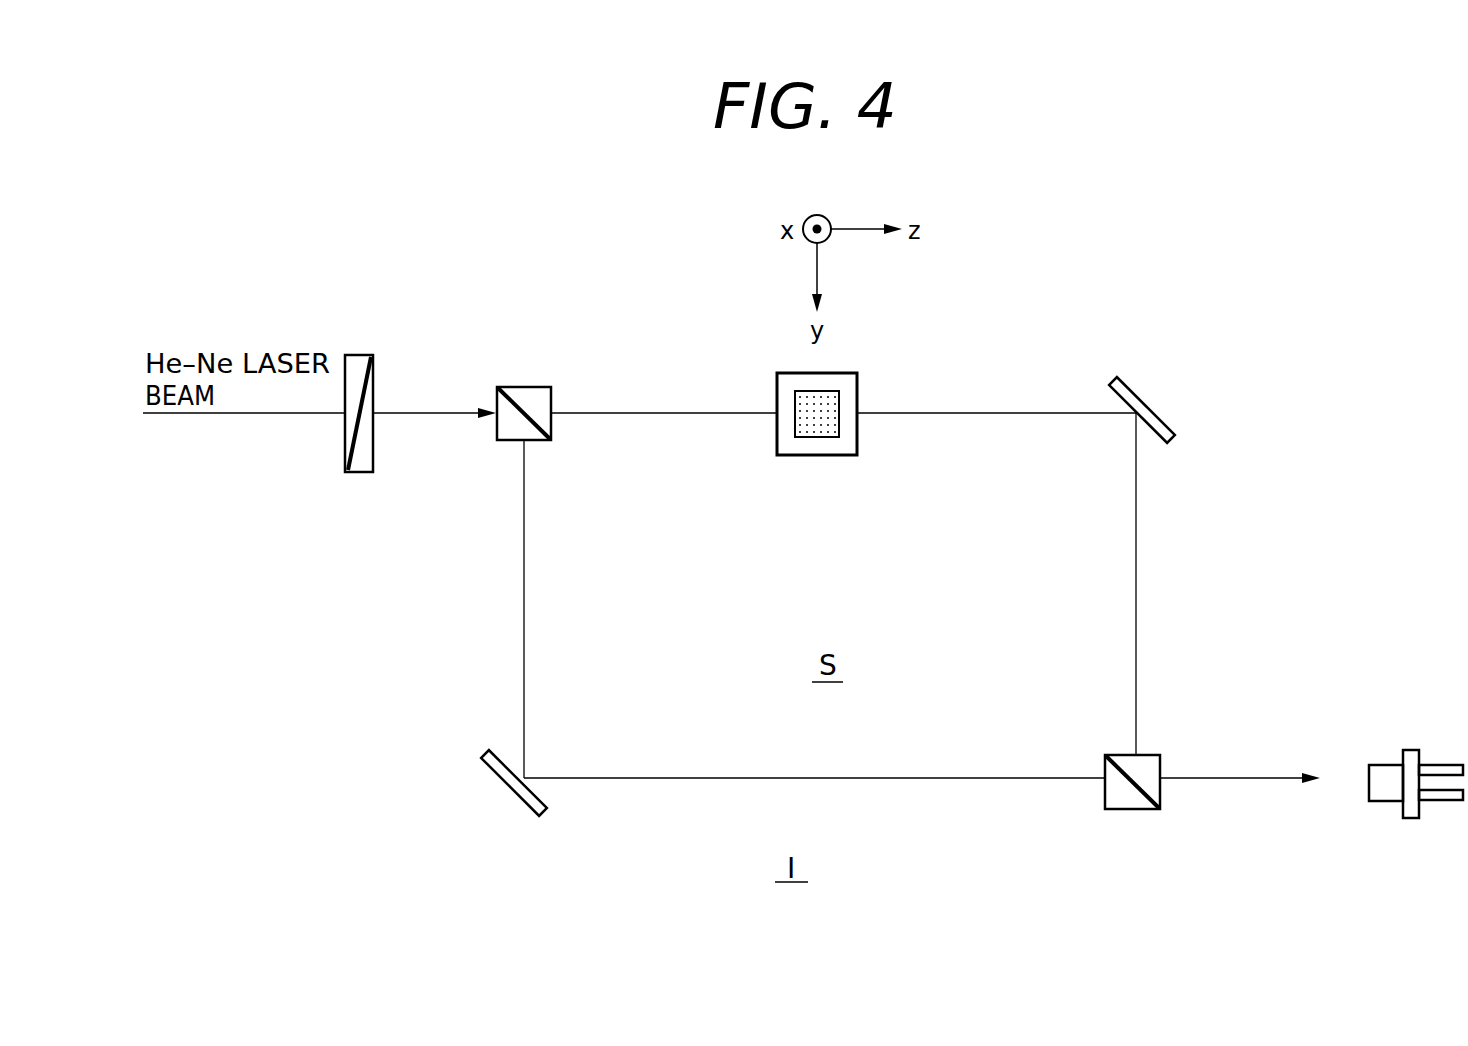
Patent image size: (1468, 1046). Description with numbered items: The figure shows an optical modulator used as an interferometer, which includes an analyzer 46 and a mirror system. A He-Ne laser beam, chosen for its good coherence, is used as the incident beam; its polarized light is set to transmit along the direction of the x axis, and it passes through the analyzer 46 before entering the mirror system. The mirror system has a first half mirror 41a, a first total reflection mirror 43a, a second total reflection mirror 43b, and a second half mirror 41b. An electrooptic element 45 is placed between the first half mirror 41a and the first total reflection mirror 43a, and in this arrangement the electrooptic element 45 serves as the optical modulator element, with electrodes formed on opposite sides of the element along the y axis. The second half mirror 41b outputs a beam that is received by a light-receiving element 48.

The analyzer 46 is at (362, 353).
The first half mirror 41a is at (533, 384).
The electrooptic element 45 is at (840, 373).
The first total reflection mirror 43a is at (1147, 397).
The second total reflection mirror 43b is at (508, 788).
The second half mirror 41b is at (1150, 753).
The light-receiving element 48 is at (1412, 748).